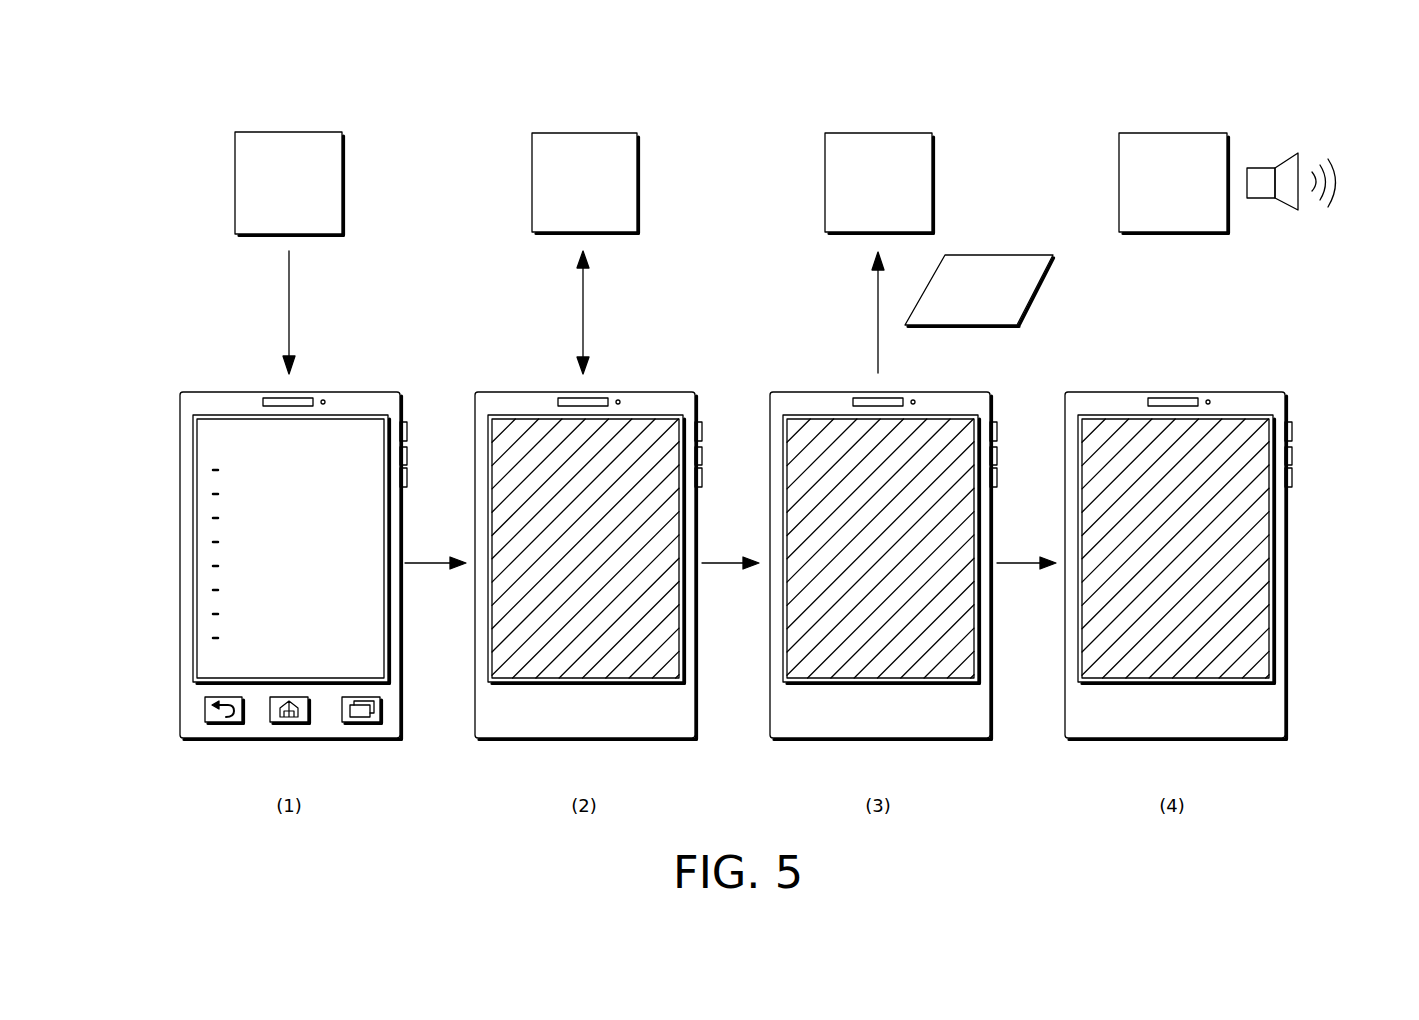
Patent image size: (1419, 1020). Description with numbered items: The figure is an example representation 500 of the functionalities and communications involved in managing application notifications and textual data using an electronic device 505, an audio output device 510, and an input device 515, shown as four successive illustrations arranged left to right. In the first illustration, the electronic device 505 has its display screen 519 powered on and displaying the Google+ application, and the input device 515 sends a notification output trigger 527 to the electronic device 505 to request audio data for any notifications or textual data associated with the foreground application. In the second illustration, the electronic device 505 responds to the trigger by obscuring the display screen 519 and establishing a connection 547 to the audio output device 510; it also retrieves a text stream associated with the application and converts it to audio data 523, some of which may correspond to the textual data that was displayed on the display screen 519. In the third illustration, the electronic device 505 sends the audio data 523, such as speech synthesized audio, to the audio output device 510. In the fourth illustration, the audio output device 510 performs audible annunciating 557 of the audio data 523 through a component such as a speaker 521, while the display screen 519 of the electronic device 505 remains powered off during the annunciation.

The representation 500 is at (160, 133).
The electronic device 505 is at (213, 392).
The audio output device 510 is at (562, 133).
The input device 515 is at (266, 132).
The display screen 519 is at (203, 556).
The speaker 521 is at (1262, 168).
The audio data 523 is at (1003, 255).
The notification output trigger 527 is at (405, 275).
The connection 547 is at (659, 300).
The audible annunciating 557 is at (1340, 182).